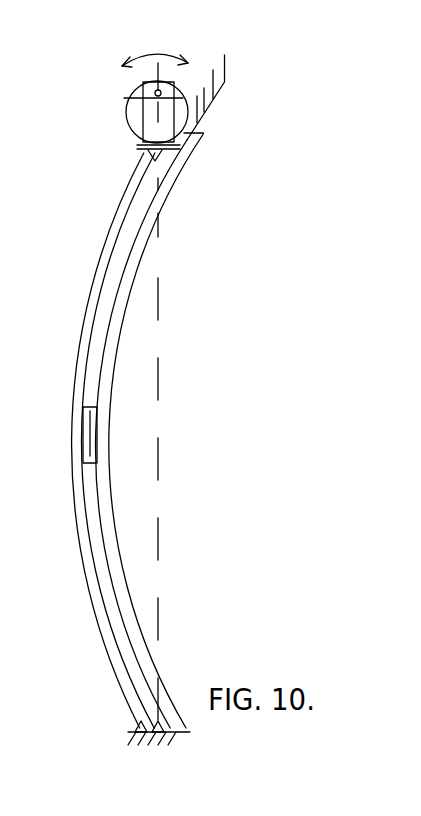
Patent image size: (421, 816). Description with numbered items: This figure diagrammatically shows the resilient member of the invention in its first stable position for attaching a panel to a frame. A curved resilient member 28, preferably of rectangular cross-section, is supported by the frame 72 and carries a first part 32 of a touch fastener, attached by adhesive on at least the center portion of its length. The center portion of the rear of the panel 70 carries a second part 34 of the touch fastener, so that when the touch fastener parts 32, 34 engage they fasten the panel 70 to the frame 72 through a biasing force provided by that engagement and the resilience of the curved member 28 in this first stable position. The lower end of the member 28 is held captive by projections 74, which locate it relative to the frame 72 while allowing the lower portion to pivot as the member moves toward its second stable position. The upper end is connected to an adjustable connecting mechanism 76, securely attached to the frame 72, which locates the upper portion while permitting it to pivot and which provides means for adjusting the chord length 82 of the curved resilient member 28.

The curved resilient member 28 is at (113, 223).
The first part of touch fastener 32 is at (85, 407).
The second part of touch fastener 34 is at (92, 428).
The panel 70 is at (178, 176).
The frame 72 is at (215, 99).
The projections 74 is at (138, 722).
The adjustable connecting mechanism 76 is at (117, 125).
The chord length 82 is at (158, 468).